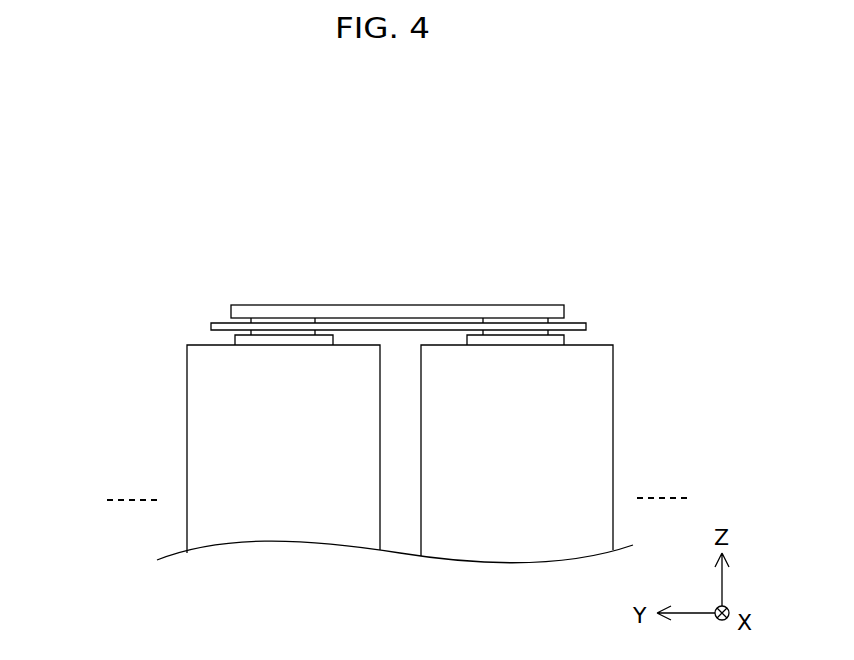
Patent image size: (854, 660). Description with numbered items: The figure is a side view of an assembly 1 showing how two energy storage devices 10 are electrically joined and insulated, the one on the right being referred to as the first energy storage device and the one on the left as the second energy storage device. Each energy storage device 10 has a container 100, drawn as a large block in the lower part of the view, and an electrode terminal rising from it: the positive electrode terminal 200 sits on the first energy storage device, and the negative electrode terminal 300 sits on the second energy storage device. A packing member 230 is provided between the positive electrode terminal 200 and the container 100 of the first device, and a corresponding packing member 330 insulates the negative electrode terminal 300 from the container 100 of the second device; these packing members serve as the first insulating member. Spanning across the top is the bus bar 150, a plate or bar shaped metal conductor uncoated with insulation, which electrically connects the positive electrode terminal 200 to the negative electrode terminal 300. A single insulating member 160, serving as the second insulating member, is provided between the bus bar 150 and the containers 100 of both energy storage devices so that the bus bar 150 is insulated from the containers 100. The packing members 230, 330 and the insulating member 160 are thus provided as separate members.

The sensor device 1 is at (663, 157).
The energy storage device 10 is at (210, 298).
The container 100 is at (187, 450).
The bus bar 150 is at (425, 305).
The insulating member 160 is at (575, 318).
The positive electrode terminal 200 is at (587, 327).
The packing member 230 is at (564, 339).
The negative electrode terminal 300 is at (211, 329).
The packing member 330 is at (235, 340).